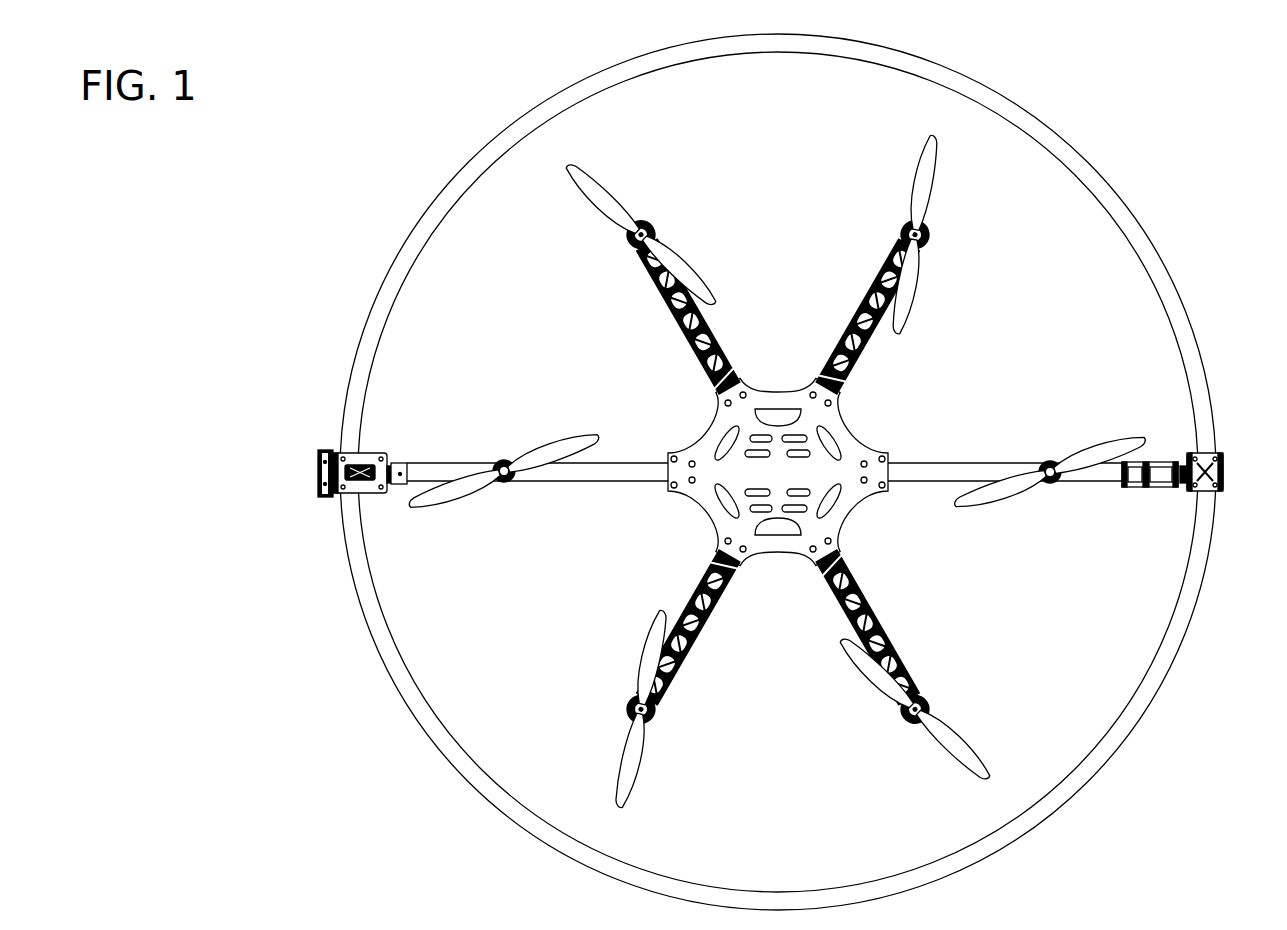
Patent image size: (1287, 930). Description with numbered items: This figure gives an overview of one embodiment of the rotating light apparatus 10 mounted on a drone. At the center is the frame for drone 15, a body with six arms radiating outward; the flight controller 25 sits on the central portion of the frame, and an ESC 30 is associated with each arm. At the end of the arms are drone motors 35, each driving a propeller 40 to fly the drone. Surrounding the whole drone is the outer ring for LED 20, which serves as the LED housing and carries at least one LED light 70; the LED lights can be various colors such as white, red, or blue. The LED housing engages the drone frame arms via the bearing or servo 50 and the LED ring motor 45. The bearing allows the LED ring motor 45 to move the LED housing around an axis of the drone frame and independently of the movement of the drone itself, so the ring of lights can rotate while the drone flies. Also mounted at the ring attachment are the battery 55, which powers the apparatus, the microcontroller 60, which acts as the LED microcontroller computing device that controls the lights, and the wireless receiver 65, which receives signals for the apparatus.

The apparatus 10 is at (678, 469).
The frame for drone 15 is at (699, 383).
The outer ring for LED 20 is at (778, 469).
The flight controller 25 is at (660, 507).
The ESC 30 is at (643, 305).
The drone motor 35 is at (895, 638).
The propeller 40 is at (674, 708).
The LED ring motor 45 is at (1125, 415).
The bearing or servo 50 is at (298, 571).
The battery 55 is at (267, 522).
The microcontroller 60 is at (260, 509).
The wireless receiver 65 is at (233, 411).
The LED light 70 is at (778, 469).